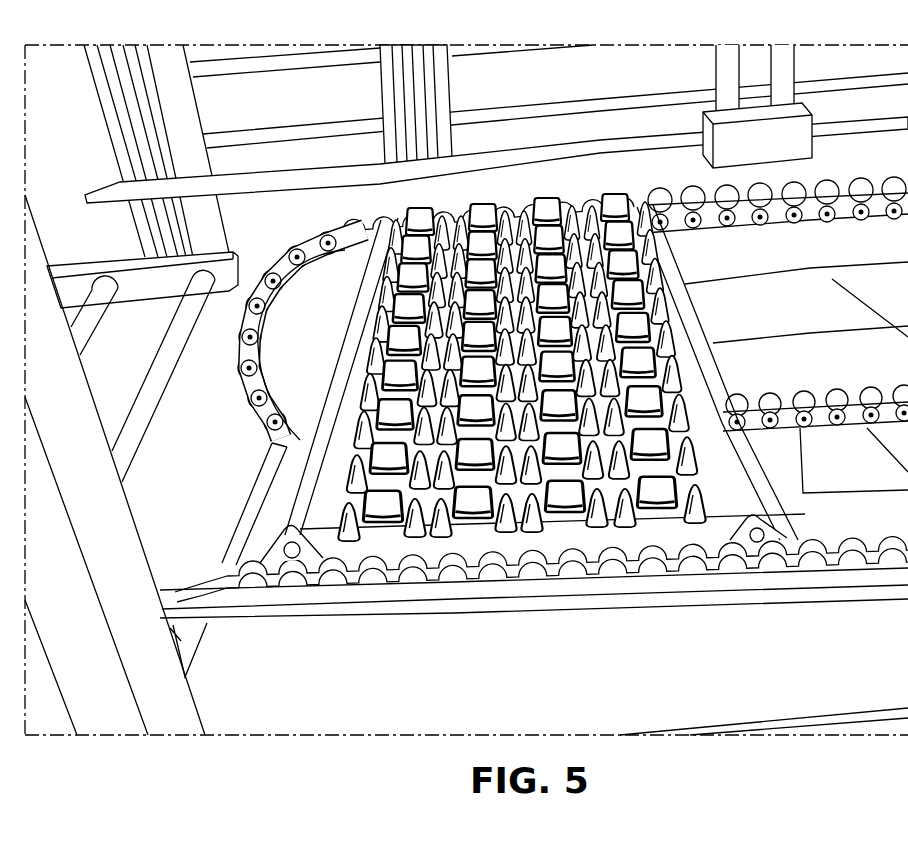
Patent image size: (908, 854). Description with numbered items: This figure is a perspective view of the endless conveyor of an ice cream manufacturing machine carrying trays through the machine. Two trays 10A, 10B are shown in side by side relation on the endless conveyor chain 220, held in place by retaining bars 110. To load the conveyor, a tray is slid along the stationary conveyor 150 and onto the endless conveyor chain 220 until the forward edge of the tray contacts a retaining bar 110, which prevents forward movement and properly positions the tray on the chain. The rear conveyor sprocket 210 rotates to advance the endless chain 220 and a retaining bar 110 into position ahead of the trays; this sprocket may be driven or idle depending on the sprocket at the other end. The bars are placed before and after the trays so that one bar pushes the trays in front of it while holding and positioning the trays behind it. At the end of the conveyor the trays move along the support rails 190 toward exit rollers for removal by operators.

The tray 10A is at (322, 473).
The tray 10B is at (364, 305).
The retaining bar 110 is at (236, 531).
The stationary conveyor 150 is at (82, 313).
The support rails 190 is at (879, 256).
The rear conveyor sprocket 210 is at (521, 367).
The endless conveyor chain 220 is at (745, 221).